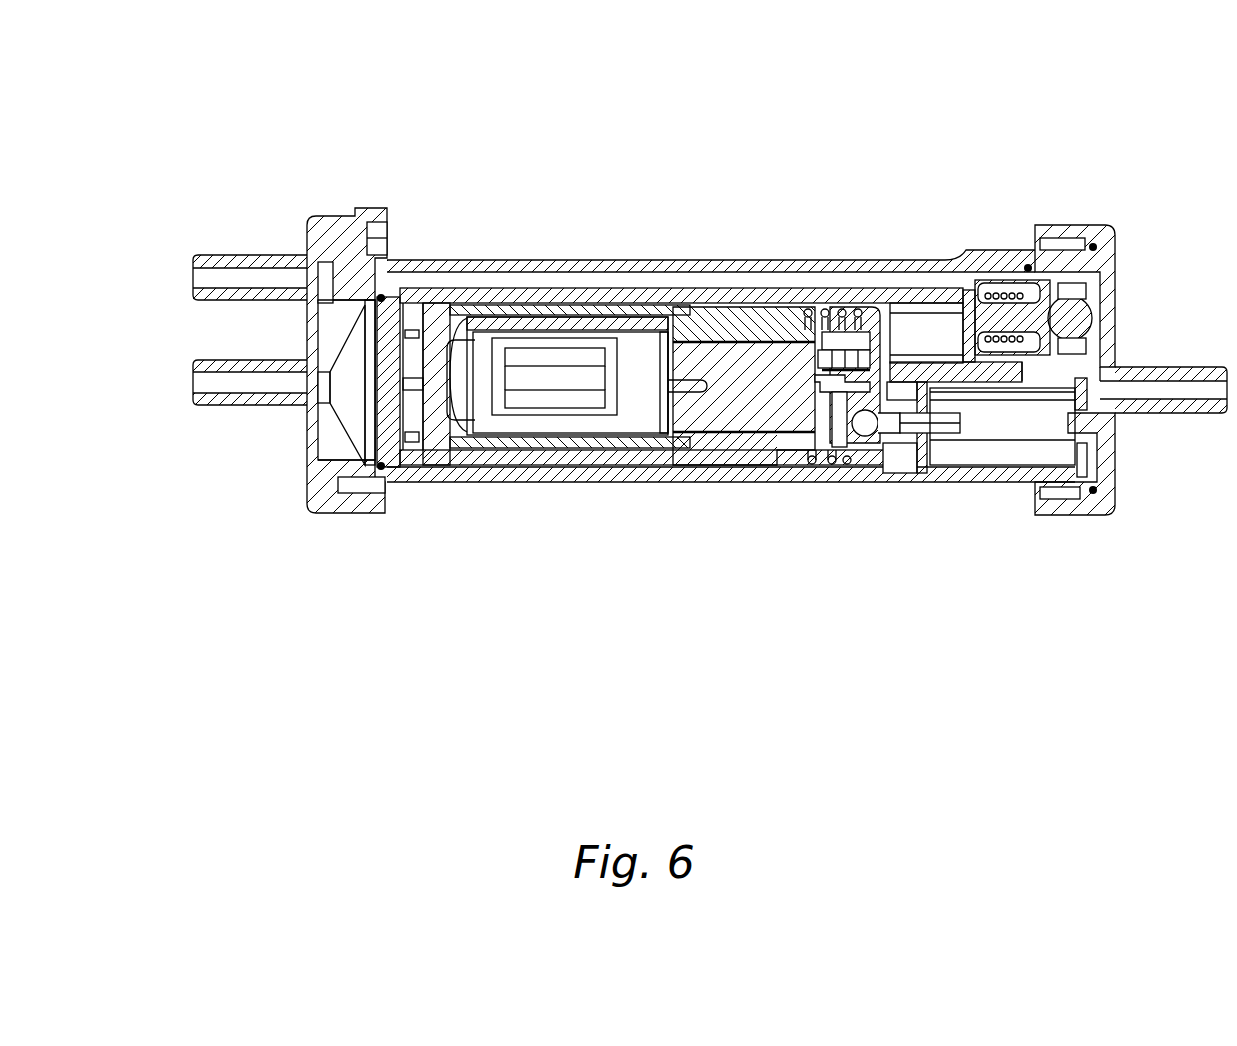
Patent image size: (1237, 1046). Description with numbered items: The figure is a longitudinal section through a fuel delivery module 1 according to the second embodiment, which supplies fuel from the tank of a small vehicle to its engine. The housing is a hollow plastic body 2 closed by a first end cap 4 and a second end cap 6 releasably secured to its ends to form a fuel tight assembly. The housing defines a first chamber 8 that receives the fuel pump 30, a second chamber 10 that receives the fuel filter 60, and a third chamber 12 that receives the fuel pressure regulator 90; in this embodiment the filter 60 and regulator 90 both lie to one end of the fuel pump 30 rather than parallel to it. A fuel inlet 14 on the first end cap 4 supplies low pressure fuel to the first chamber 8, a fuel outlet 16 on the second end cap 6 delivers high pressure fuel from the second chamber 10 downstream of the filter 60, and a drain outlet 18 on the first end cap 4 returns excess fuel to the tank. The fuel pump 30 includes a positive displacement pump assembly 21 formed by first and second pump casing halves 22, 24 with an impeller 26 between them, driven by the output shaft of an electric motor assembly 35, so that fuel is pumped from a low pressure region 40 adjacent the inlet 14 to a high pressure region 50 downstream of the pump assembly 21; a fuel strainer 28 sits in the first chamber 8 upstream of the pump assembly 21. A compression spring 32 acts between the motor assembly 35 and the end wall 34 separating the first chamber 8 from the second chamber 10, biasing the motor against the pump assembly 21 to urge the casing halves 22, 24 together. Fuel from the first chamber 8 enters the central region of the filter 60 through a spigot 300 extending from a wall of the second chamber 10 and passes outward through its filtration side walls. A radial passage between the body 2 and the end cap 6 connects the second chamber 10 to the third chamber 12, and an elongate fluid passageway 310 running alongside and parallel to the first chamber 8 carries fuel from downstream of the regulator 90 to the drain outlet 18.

The fuel delivery module 1 is at (310, 104).
The hollow body 2 is at (615, 260).
The first end cap 4 is at (318, 228).
The second end cap 6 is at (1108, 228).
The first chamber 8 is at (792, 447).
The second chamber 10 is at (893, 462).
The third chamber 12 is at (1082, 290).
The fuel inlet 14 is at (222, 406).
The fuel outlet 16 is at (1175, 413).
The drain outlet 18 is at (212, 256).
The positive displacement pump assembly 21 is at (367, 633).
The first pump casing half 22 is at (387, 443).
The second pump casing half 24 is at (440, 460).
The impeller 26 is at (415, 443).
The fuel strainer 28 is at (347, 397).
The fuel pump 30 is at (367, 722).
The compression spring 32 is at (833, 462).
The end wall 34 is at (878, 455).
The electric motor assembly 35 is at (568, 437).
The low pressure region 40 is at (332, 443).
The high pressure region 50 is at (1103, 377).
The fuel filter 60 is at (993, 455).
The fuel pressure regulator 90 is at (997, 283).
The spigot 300 is at (938, 435).
The elongate fluid passageway 310 is at (712, 286).